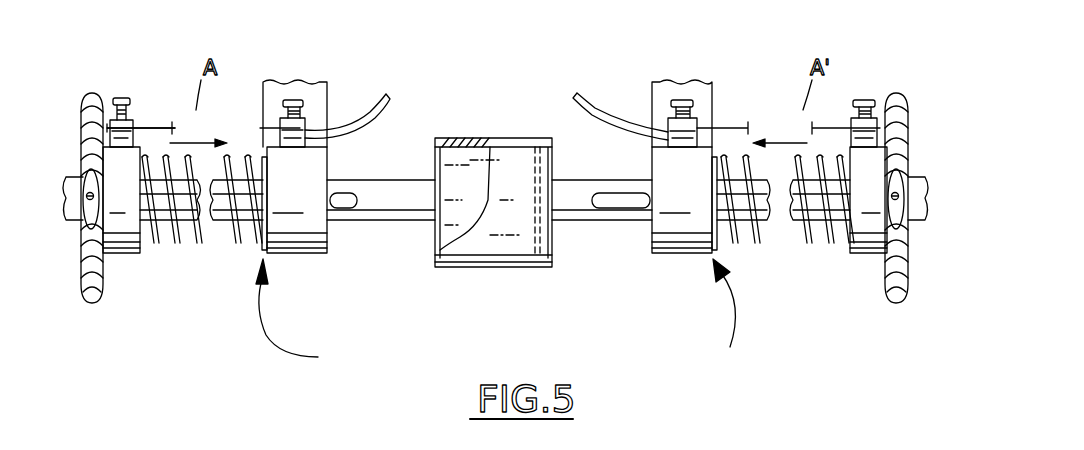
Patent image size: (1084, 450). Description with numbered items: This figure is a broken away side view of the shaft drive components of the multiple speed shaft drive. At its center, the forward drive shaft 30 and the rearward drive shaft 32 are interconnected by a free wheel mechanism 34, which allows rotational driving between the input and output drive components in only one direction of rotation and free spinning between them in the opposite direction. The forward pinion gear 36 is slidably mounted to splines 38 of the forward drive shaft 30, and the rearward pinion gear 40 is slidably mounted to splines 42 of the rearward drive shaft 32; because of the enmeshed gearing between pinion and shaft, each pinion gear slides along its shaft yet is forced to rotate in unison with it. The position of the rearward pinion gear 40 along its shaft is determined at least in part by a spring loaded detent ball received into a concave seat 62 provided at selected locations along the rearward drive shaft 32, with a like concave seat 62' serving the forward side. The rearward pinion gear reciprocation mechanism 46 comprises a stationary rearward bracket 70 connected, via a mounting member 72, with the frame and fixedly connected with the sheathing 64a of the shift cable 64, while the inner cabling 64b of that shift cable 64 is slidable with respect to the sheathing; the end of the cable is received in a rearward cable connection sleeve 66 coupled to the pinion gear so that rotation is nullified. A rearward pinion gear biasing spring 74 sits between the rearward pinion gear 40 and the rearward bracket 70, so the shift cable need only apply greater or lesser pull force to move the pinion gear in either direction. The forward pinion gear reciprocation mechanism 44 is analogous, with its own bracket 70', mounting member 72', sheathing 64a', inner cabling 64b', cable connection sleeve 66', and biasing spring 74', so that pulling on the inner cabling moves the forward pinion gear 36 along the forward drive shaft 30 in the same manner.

The forward drive shaft 30 is at (617, 220).
The rearward drive shaft 32 is at (352, 222).
The free wheel mechanism 34 is at (470, 137).
The forward pinion gear 36 is at (895, 300).
The splines 38 is at (927, 180).
The rearward pinion gear 40 is at (100, 265).
The splines 42 is at (74, 258).
The forward pinion gear reciprocation mechanism 44 is at (722, 315).
The rearward pinion gear reciprocation mechanism 46 is at (303, 315).
The concave seat 62 is at (202, 229).
The concave seat 62' is at (787, 230).
The locking screw assembly 64 is at (342, 108).
The sheathing 64a is at (371, 94).
The inner cabling 64b is at (159, 71).
The sheathing 64a' is at (620, 95).
The inner cabling 64b' is at (740, 74).
The rearward cable connection sleeve 66 is at (155, 256).
The cable connection sleeve 66' is at (852, 220).
The rearward bracket 70 is at (322, 195).
The bracket 70' is at (676, 244).
The mounting member 72 is at (217, 74).
The mounting member 72' is at (700, 74).
The rearward pinion gear biasing spring 74 is at (250, 285).
The pinion gear biasing spring 74' is at (750, 249).